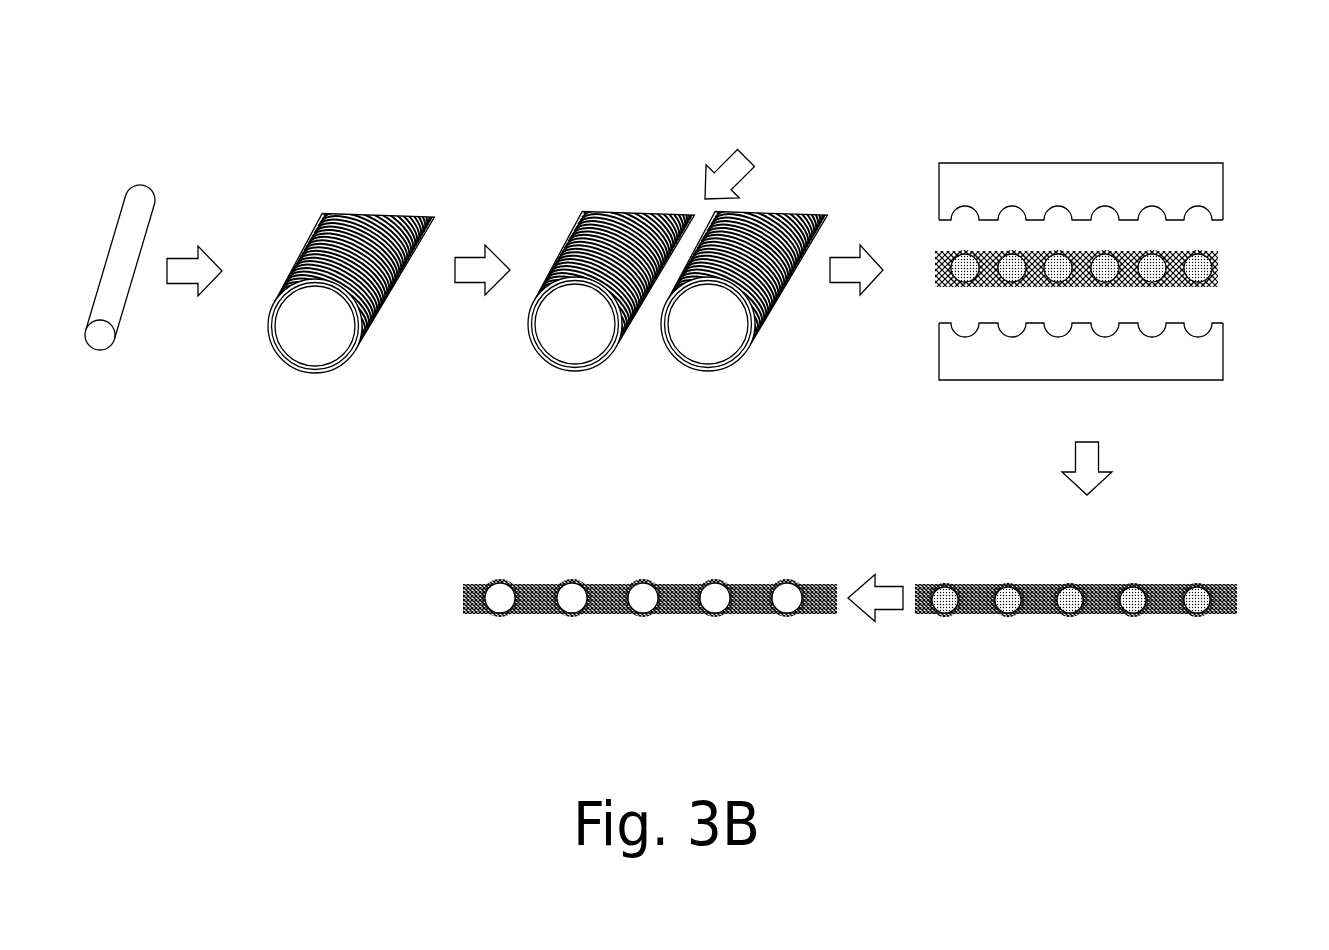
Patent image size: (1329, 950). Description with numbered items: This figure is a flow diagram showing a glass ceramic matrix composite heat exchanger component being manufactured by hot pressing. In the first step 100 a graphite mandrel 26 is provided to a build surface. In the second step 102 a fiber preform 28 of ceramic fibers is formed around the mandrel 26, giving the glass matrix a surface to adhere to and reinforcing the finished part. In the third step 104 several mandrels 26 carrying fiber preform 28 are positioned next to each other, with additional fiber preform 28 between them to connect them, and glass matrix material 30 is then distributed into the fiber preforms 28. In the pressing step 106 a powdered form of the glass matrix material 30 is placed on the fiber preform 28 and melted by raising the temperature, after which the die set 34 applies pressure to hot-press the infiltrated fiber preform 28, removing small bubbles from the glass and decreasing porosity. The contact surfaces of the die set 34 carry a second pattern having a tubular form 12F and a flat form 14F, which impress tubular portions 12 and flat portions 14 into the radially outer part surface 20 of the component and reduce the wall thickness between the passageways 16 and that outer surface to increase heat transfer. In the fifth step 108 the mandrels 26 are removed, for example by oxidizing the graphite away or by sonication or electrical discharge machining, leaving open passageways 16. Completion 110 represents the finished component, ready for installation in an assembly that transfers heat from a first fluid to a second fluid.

The first step 100 is at (42, 143).
The mandrel 26 is at (102, 337).
The second step 102 is at (283, 143).
The fiber preform 28 is at (383, 214).
The third step 104 is at (849, 142).
The glass matrix material 30 is at (727, 165).
The pressing step 106 is at (1118, 190).
The die set 34 is at (1120, 236).
The flat form 14F is at (987, 218).
The tubular form 12F is at (1150, 207).
The fifth step 108 is at (1076, 665).
The completion 110 is at (682, 621).
The flat portion 14 is at (535, 618).
The tubular portion 12 is at (573, 618).
The passageway 16 is at (787, 597).
The radially outer part surface 20 is at (653, 577).